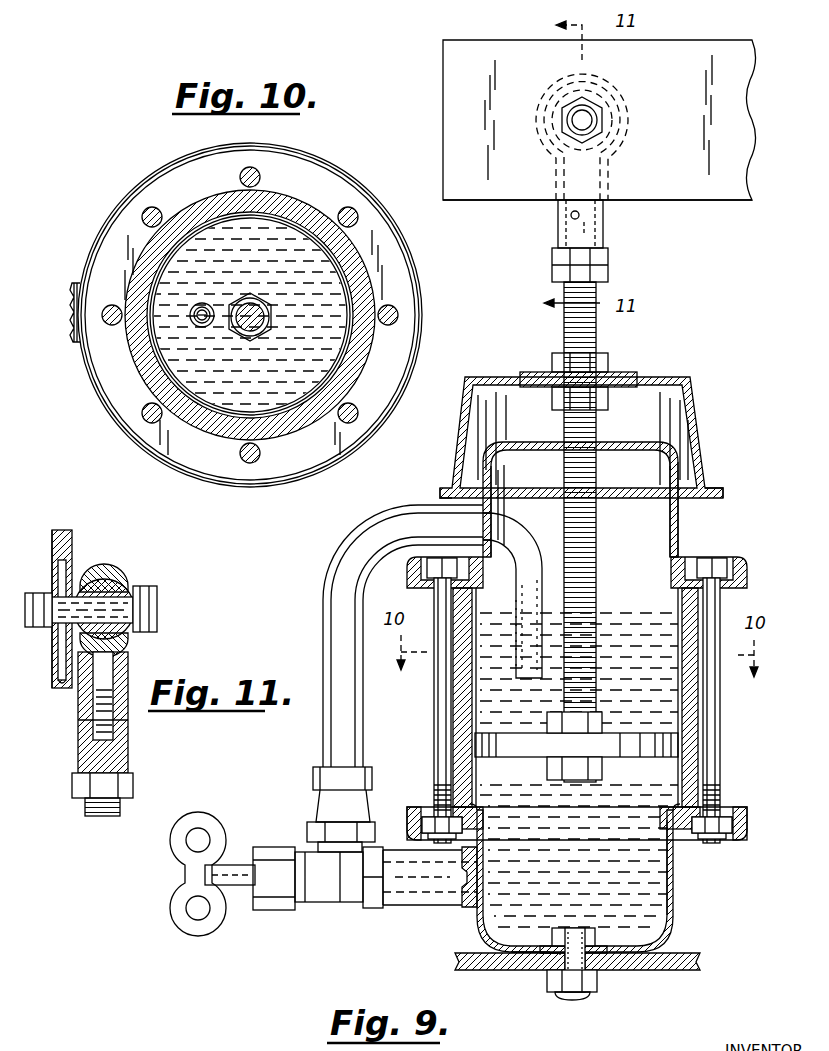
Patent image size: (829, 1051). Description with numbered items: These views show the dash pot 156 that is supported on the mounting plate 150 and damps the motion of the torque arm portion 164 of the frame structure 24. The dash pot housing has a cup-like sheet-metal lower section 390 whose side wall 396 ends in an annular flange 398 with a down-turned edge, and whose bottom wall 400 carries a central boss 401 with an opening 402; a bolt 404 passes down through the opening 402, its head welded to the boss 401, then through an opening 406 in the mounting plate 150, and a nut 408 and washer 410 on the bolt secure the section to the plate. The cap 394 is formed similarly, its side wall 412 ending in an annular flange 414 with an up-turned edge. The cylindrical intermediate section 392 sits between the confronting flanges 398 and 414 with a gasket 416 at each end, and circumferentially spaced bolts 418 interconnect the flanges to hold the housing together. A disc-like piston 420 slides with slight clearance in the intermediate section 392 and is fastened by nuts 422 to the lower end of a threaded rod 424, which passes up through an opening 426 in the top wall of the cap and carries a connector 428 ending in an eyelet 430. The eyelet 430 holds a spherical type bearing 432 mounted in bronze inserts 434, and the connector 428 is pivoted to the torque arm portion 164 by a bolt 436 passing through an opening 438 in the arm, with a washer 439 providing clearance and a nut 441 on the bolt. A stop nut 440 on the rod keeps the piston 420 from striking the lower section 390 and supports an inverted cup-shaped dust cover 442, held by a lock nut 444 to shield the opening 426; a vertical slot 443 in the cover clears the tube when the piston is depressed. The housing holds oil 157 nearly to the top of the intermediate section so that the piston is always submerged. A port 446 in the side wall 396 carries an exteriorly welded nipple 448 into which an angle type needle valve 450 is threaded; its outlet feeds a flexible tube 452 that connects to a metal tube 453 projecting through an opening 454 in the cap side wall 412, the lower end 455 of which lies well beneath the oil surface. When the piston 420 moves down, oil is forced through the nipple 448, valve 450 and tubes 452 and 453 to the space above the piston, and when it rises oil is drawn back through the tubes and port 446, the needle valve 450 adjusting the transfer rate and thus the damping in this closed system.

In FIG. 9, the frame member / wall 24 is at (760, 121).
In FIG. 11, the frame member / wall 24 is at (68, 531).
In FIG. 9, the torque arm portion 164 is at (725, 192).
In FIG. 11, the torque arm portion 164 is at (60, 528).
In FIG. 9, the mounting plate 150 is at (678, 969).
In FIG. 9, the dash pot 156 is at (733, 494).
In FIG. 9, the oil 157 is at (628, 612).
In FIG. 9, the lower section 390 is at (673, 886).
In FIG. 10, the cylindrical intermediate section 392 is at (350, 262).
In FIG. 9, the cylindrical intermediate section 392 is at (700, 697).
In FIG. 9, the cap 394 is at (680, 519).
In FIG. 9, the side wall 396 is at (674, 862).
In FIG. 9, the annular flange 398 is at (735, 808).
In FIG. 9, the bottom wall 400 is at (520, 950).
In FIG. 9, the central boss 401 is at (565, 930).
In FIG. 9, the opening 402 is at (595, 945).
In FIG. 9, the bolt 404 is at (582, 926).
In FIG. 9, the opening 406 is at (558, 965).
In FIG. 9, the nut 408 is at (597, 988).
In FIG. 9, the washer 410 is at (551, 992).
In FIG. 9, the side wall 412 is at (494, 482).
In FIG. 9, the annular flange 414 is at (745, 582).
In FIG. 9, the gasket 416 is at (672, 559).
In FIG. 10, the bolts 418 is at (160, 207).
In FIG. 9, the bolts 418 is at (436, 700).
In FIG. 10, the disc-like piston 420 is at (280, 215).
In FIG. 9, the disc-like piston 420 is at (634, 733).
In FIG. 10, the nuts 422 is at (215, 292).
In FIG. 9, the nuts 422 is at (547, 726).
In FIG. 10, the threaded rod 424 is at (262, 310).
In FIG. 9, the threaded rod 424 is at (597, 527).
In FIG. 11, the threaded rod 424 is at (133, 798).
In FIG. 9, the opening 426 is at (602, 450).
In FIG. 9, the connector 428 is at (603, 212).
In FIG. 11, the connector 428 is at (128, 748).
In FIG. 9, the eyelet 430 is at (594, 78).
In FIG. 11, the eyelet 430 is at (88, 575).
In FIG. 11, the spherical type bearing 432 is at (128, 595).
In FIG. 11, the bronze inserts 434 is at (118, 576).
In FIG. 9, the bolt 436 is at (590, 113).
In FIG. 11, the bolt 436 is at (155, 600).
In FIG. 9, the opening 438 is at (545, 163).
In FIG. 11, the opening 438 is at (60, 640).
In FIG. 11, the washer 439 is at (58, 672).
In FIG. 9, the stop nut 440 is at (608, 402).
In FIG. 9, the nut 441 is at (605, 98).
In FIG. 11, the nut 441 is at (30, 590).
In FIG. 9, the dust cover 442 is at (680, 380).
In FIG. 9, the vertical slot 443 is at (448, 482).
In FIG. 9, the lock nut 444 is at (604, 356).
In FIG. 9, the port 446 is at (484, 880).
In FIG. 10, the nipple 448 is at (72, 340).
In FIG. 9, the nipple 448 is at (420, 905).
In FIG. 9, the needle valve 450 is at (343, 902).
In FIG. 9, the flexible tube 452 is at (326, 608).
In FIG. 10, the metal tube 453 is at (200, 327).
In FIG. 9, the metal tube 453 is at (516, 650).
In FIG. 9, the opening 454 is at (504, 516).
In FIG. 9, the lower end 455 is at (530, 680).